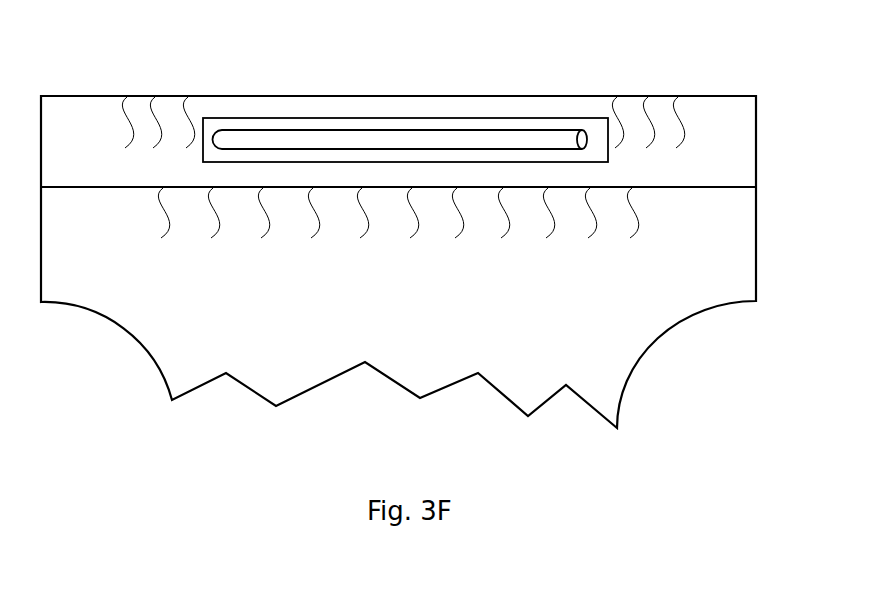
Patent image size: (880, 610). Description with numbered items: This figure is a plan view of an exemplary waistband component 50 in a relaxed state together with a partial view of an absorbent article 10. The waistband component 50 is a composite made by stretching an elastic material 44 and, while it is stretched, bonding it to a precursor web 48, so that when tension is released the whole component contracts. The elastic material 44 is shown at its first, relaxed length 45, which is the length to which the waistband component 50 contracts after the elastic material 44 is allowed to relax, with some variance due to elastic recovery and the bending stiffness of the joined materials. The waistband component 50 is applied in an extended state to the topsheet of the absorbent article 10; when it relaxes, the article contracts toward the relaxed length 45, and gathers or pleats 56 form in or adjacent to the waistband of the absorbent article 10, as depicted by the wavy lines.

The absorbent article 10 is at (695, 337).
The elastic material 44 is at (588, 138).
The first, relaxed length 45 is at (608, 86).
The precursor web 48 is at (598, 128).
The waistband component 50 is at (183, 142).
The gathers or pleats 56 is at (683, 125).